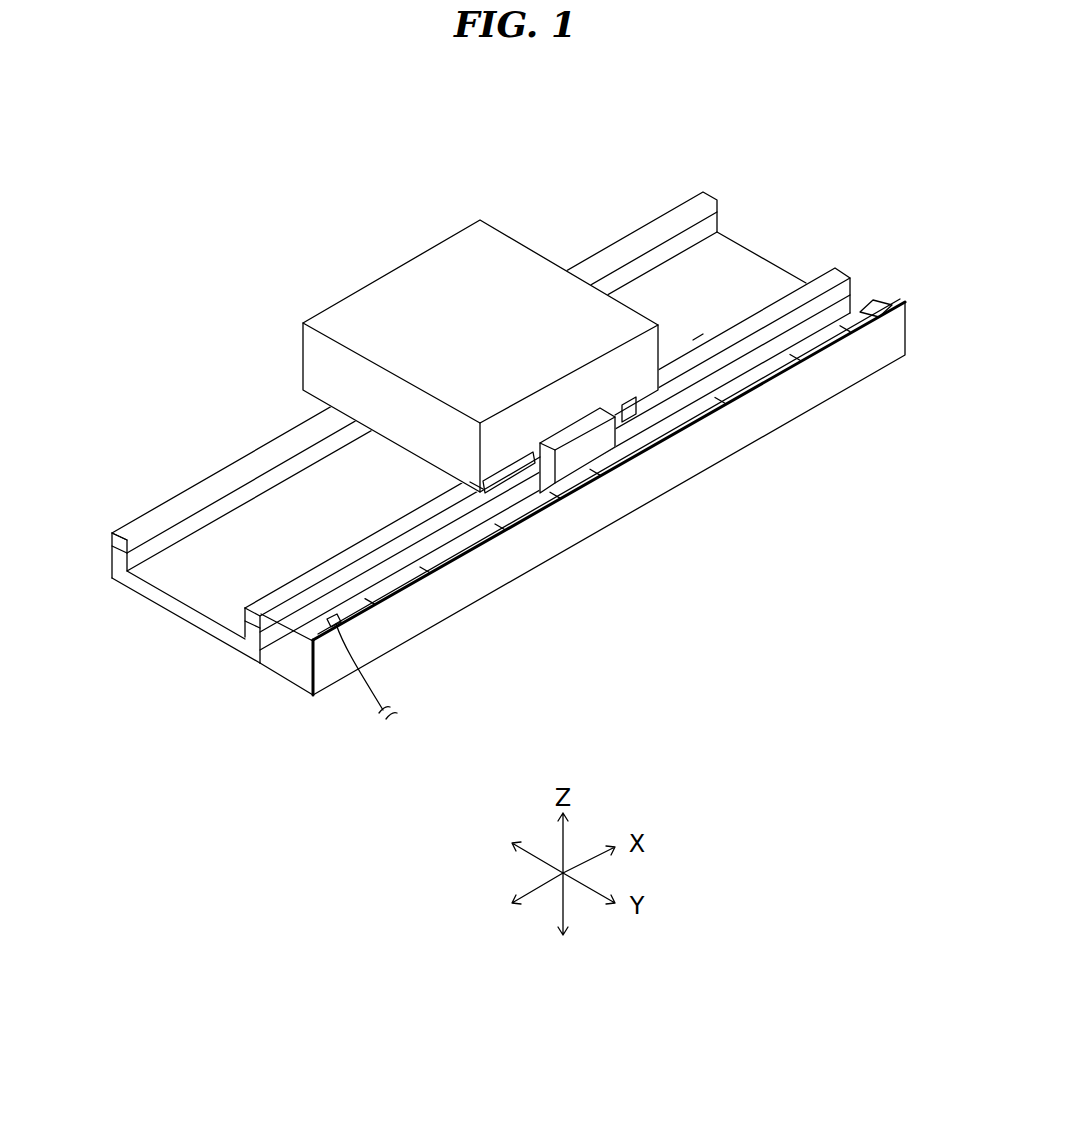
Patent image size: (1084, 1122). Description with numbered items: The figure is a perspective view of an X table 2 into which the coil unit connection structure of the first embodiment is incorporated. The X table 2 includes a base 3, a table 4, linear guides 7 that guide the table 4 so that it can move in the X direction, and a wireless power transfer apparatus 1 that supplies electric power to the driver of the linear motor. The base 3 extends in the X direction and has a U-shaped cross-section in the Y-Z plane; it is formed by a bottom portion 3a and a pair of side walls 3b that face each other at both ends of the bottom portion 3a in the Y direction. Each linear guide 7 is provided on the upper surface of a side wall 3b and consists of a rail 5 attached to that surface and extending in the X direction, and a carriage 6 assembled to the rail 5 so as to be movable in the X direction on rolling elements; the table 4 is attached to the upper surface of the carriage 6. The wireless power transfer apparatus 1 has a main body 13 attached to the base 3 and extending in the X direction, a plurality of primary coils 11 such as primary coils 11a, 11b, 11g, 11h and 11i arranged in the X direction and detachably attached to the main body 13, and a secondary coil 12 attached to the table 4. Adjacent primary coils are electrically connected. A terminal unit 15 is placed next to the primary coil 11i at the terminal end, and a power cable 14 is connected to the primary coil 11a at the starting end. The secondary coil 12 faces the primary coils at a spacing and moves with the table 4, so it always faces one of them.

The wireless power transfer apparatus 1 is at (654, 453).
The X table 2 is at (491, 185).
The base 3 is at (212, 545).
The bottom portion 3a is at (185, 612).
The side wall 3b is at (116, 565).
The table 4 is at (383, 292).
The rail 5 is at (698, 347).
The carriage 6 is at (512, 483).
The linear guide 7 is at (643, 162).
The primary coils 11 is at (590, 478).
The primary coil 11a is at (375, 606).
The primary coil 11b is at (430, 575).
The primary coil 11g is at (724, 398).
The primary coil 11h is at (786, 365).
The primary coil 11i is at (843, 332).
The secondary coil 12 is at (584, 452).
The main body 13 is at (297, 676).
The power cable 14 is at (347, 693).
The terminal unit 15 is at (892, 310).